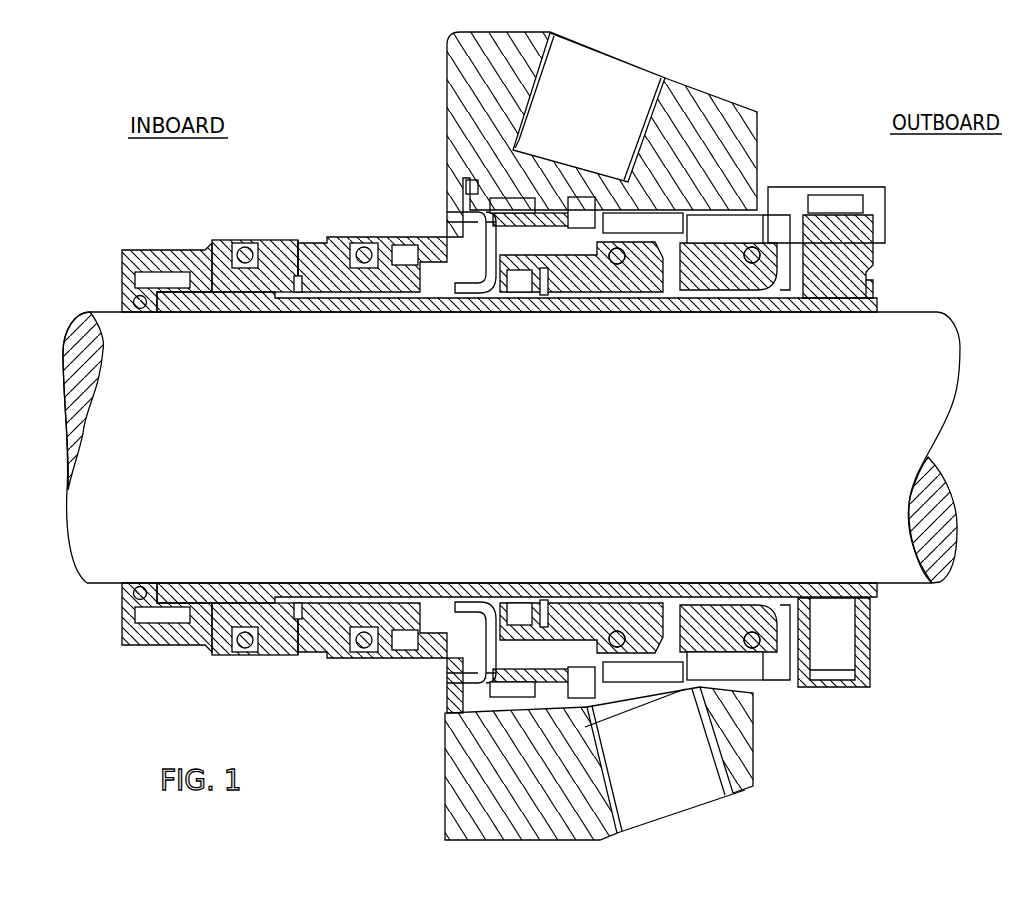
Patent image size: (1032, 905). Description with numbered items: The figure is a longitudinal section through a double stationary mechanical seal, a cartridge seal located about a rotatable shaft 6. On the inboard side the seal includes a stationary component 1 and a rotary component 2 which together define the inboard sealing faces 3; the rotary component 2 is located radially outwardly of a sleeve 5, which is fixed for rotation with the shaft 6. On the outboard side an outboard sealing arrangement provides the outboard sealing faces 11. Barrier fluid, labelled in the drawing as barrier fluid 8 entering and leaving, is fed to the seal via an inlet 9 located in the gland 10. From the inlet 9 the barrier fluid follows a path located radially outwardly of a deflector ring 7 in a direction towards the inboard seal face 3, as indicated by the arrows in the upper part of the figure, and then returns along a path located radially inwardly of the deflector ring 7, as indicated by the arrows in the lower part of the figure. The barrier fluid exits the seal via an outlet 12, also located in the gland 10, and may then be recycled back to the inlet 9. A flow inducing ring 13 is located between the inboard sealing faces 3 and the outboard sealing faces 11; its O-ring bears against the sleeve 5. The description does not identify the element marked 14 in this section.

The stationary component 1 is at (322, 233).
The rotary component 2 is at (280, 237).
The sealing faces 3 is at (298, 240).
The sleeve 5 is at (213, 307).
The rotatable shaft 6 is at (913, 330).
The deflector ring 7 is at (480, 290).
The barrier fluid 8 is at (855, 56).
The inlet 9 is at (627, 120).
The gland 10 is at (730, 142).
The sealing faces 11 is at (665, 282).
The outlet 12 is at (700, 730).
The flow inducing ring 13 is at (548, 280).
The drive pin 14 is at (545, 218).